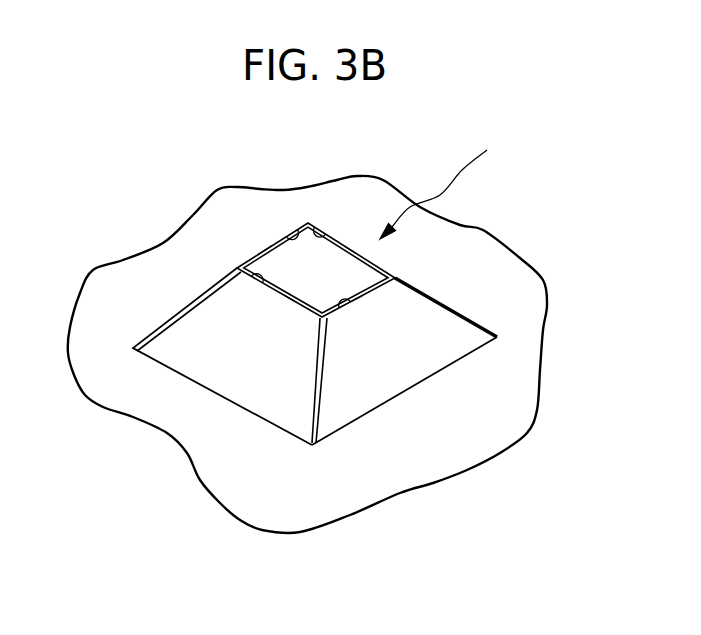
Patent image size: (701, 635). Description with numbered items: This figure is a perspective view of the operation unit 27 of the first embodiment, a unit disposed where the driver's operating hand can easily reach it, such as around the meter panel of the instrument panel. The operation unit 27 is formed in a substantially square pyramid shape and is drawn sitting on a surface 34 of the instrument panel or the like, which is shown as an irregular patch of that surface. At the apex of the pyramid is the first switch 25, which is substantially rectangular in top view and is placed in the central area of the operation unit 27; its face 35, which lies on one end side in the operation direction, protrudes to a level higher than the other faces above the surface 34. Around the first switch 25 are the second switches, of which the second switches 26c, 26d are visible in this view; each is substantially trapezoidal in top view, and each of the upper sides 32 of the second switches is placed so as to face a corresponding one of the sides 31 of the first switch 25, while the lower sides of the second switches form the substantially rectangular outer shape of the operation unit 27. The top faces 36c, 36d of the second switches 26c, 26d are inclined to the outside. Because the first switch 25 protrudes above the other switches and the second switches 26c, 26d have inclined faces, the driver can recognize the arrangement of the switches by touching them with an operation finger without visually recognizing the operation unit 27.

The first switch 25 is at (385, 266).
The operation unit 27 is at (442, 178).
The sides of the first switch 31 is at (266, 247).
The upper sides of the second switches 32 is at (292, 228).
The surface of the instrument panel 34 is at (280, 493).
The face of the first switch 35 is at (260, 255).
The second switch 26c is at (432, 357).
The second switch 26d is at (187, 353).
The top face of the second switch 36c is at (457, 337).
The top face of the second switch 36d is at (273, 407).